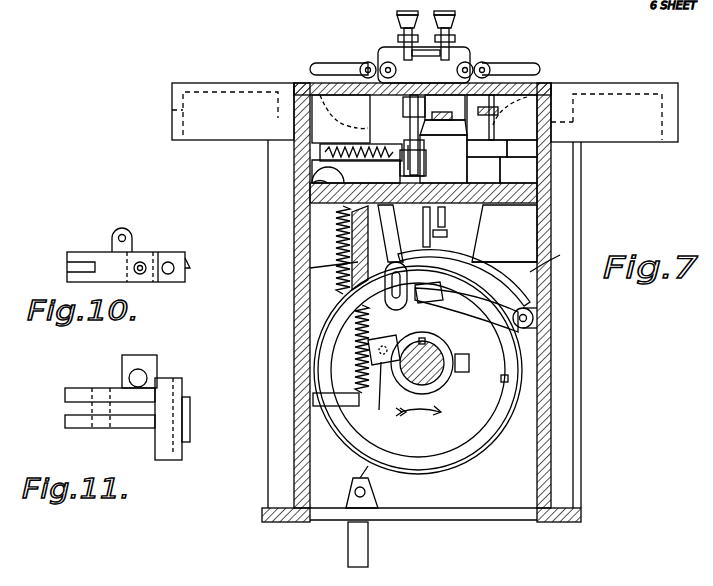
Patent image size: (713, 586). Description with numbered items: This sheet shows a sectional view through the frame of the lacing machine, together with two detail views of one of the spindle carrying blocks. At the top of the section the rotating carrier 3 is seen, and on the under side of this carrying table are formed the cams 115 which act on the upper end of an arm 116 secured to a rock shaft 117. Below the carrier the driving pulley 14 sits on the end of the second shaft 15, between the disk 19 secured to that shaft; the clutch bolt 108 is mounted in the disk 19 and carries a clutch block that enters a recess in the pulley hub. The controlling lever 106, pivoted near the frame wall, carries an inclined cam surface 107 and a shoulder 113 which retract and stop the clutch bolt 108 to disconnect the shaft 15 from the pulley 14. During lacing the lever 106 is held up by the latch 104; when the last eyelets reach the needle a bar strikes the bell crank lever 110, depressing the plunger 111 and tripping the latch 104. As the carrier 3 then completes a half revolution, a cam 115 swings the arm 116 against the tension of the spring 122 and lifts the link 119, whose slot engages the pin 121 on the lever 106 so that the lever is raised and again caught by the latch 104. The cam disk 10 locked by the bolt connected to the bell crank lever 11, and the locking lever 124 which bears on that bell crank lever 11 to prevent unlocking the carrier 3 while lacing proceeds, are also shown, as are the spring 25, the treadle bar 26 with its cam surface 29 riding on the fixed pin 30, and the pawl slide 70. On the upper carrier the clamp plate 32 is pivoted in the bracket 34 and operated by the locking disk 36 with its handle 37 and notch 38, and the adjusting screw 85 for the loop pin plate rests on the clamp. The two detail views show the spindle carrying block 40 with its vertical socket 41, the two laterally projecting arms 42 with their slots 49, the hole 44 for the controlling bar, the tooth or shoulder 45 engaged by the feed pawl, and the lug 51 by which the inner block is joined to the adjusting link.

In FIG. 7, the carrier 3 is at (578, 83).
In FIG. 7, the cam disk 10 is at (530, 272).
In FIG. 7, the bell crank lever 11 is at (440, 256).
In FIG. 7, the pulley 14 is at (484, 458).
In FIG. 7, the second shaft 15 is at (450, 366).
In FIG. 7, the disk 19 is at (508, 379).
In FIG. 7, the spring 25 is at (338, 232).
In FIG. 7, the bar 26 is at (362, 555).
In FIG. 7, the cam surface 29 is at (372, 476).
In FIG. 7, the fixed pin 30 is at (355, 492).
In FIG. 7, the clamp plate 32 is at (470, 62).
In FIG. 7, the bracket 34 is at (492, 64).
In FIG. 7, the locking disk 36 is at (367, 62).
In FIG. 7, the operating handle 37 is at (327, 63).
In FIG. 7, the notch 38 is at (386, 62).
In FIG. 10, the spindle carrying block 40 is at (182, 282).
In FIG. 11, the spindle carrying block 40 is at (122, 366).
In FIG. 10, the vertical socket 41 is at (172, 262).
In FIG. 11, the vertical socket 41 is at (172, 458).
In FIG. 10, the laterally projecting arms 42 is at (95, 258).
In FIG. 11, the laterally projecting arms 42 is at (110, 428).
In FIG. 11, the hole 44 is at (142, 376).
In FIG. 10, the tooth or shoulder 45 is at (190, 266).
In FIG. 11, the tooth or shoulder 45 is at (190, 420).
In FIG. 10, the slots 49 is at (70, 268).
In FIG. 10, the lug 51 is at (133, 240).
In FIG. 7, the slide 70 is at (444, 130).
In FIG. 7, the adjusting screw 85 is at (402, 22).
In FIG. 7, the latch 104 is at (388, 262).
In FIG. 7, the controlling lever 106 is at (533, 318).
In FIG. 7, the cam surface 107 is at (465, 318).
In FIG. 7, the clutch bolt 108 is at (379, 405).
In FIG. 7, the bell crank lever 110 is at (412, 126).
In FIG. 7, the plunger 111 is at (424, 165).
In FIG. 7, the shoulder 113 is at (425, 304).
In FIG. 7, the cams 115 is at (294, 118).
In FIG. 7, the arm 116 is at (320, 150).
In FIG. 7, the rock shaft 117 is at (320, 183).
In FIG. 7, the link 119 is at (404, 268).
In FIG. 7, the pin 121 is at (392, 290).
In FIG. 7, the spring 122 is at (392, 168).
In FIG. 7, the locking lever 124 is at (433, 227).